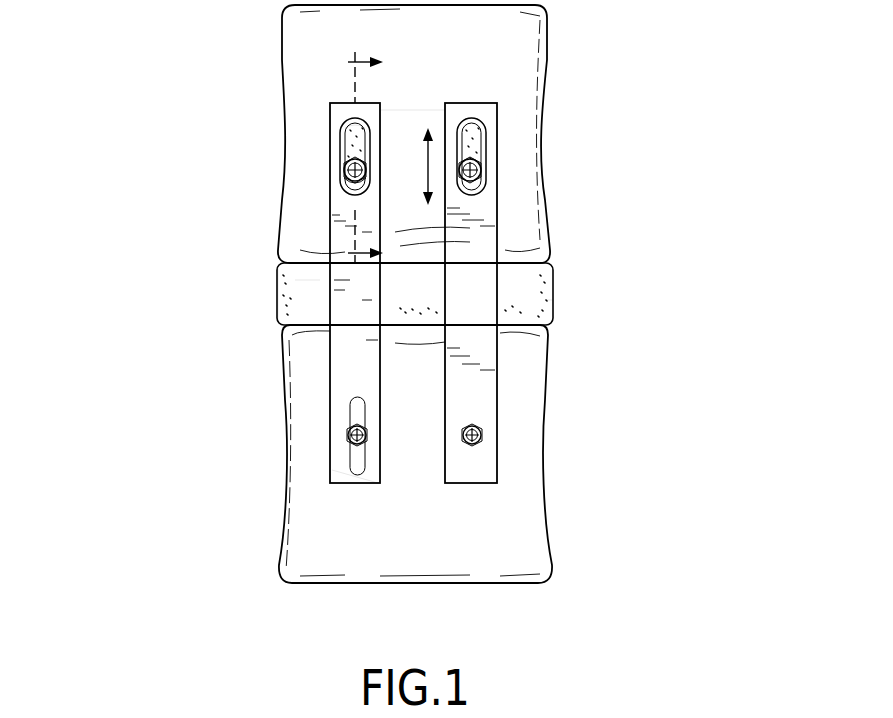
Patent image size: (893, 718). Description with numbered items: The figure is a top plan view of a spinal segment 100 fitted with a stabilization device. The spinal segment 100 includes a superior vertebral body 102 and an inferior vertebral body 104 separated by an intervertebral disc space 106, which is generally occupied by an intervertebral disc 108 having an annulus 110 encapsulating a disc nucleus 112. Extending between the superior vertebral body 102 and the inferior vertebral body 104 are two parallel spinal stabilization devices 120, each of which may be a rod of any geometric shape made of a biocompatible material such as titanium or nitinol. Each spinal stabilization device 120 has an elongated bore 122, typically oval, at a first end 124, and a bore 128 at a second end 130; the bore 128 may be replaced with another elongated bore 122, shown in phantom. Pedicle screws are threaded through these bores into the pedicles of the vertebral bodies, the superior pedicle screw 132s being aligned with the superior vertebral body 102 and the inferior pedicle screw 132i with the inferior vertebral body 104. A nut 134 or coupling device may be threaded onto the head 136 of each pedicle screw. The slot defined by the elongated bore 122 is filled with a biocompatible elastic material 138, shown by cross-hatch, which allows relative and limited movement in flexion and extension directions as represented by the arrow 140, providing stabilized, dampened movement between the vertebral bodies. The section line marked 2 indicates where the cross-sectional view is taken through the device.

The spinal segment 100 is at (458, 294).
The superior vertebral body 102 is at (543, 83).
The inferior vertebral body 104 is at (545, 468).
The intervertebral disc space 106 is at (588, 327).
The intervertebral disc 108 is at (547, 287).
The annulus 110 is at (278, 285).
The disc nucleus 112 is at (318, 305).
The spinal stabilization device 120 is at (446, 473).
The elongated bore 122 is at (340, 140).
The first end 124 is at (333, 104).
The bore 128 is at (348, 432).
The second end 130 is at (338, 485).
The superior pedicle screw 132s is at (343, 168).
The inferior pedicle screw 132i is at (480, 435).
The nut 134 is at (341, 181).
The head 136 is at (475, 447).
The elastic material 138 is at (347, 128).
The arrow 140 is at (425, 158).
The section line 2- 2 is at (365, 160).